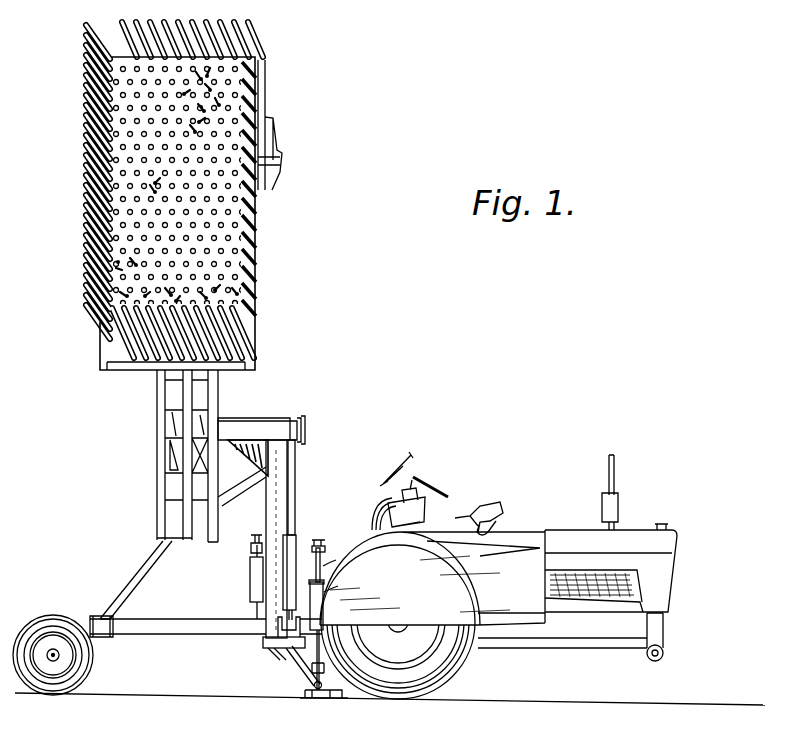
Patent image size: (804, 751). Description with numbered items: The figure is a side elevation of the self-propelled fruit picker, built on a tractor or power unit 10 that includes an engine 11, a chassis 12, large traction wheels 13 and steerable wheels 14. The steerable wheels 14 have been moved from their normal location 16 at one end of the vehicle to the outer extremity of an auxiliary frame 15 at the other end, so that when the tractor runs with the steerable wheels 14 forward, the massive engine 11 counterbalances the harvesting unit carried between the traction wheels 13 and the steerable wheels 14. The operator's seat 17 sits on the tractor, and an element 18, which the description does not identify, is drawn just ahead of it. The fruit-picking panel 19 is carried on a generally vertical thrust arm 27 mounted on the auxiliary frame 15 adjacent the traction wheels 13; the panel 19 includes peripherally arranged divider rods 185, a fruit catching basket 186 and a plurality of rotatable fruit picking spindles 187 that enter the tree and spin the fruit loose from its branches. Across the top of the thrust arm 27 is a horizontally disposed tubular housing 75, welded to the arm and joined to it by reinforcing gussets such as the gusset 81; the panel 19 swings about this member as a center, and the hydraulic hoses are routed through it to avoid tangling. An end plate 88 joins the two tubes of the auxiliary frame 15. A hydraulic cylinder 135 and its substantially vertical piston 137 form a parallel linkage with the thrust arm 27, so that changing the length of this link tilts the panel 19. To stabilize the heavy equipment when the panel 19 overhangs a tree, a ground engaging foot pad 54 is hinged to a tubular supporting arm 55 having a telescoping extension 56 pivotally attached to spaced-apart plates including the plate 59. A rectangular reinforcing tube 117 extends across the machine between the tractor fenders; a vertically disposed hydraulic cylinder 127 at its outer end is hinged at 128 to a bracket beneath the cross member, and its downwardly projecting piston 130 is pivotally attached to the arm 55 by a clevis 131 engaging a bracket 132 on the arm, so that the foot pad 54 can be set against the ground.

The tractor or power unit 10 is at (525, 567).
The engine 11 is at (650, 573).
The chassis 12 is at (580, 649).
The traction wheels 13 is at (452, 665).
The steerable wheels 14 is at (56, 683).
The auxiliary frame 15 is at (203, 637).
The normal steerable wheel location 16 is at (663, 653).
The operator's seat 17 is at (495, 500).
The steering wheel 18 is at (420, 478).
The fruit-picking panel 19 is at (179, 191).
The thrust arm 27 is at (272, 510).
The ground engaging foot pads 54 is at (312, 699).
The tubular supporting arms 55 is at (293, 663).
The telescoping extensions 56 is at (322, 684).
The plate 59 is at (262, 655).
The tubular housing 75 is at (268, 420).
The reinforcing gusset 81 is at (262, 456).
The end plate 88 is at (145, 575).
The reinforcing tube 117 is at (320, 558).
The hydraulically operated cylinder 127 is at (325, 592).
The hinge 128 is at (323, 572).
The piston 130 is at (316, 636).
The clevis 131 is at (316, 672).
The bracket 132 is at (290, 652).
The hydraulic cylinder 135 is at (293, 543).
The piston 137 is at (296, 475).
The divider rods 185 is at (256, 36).
The fruit catching basket 186 is at (100, 346).
The fruit picking spindles 187 is at (127, 284).